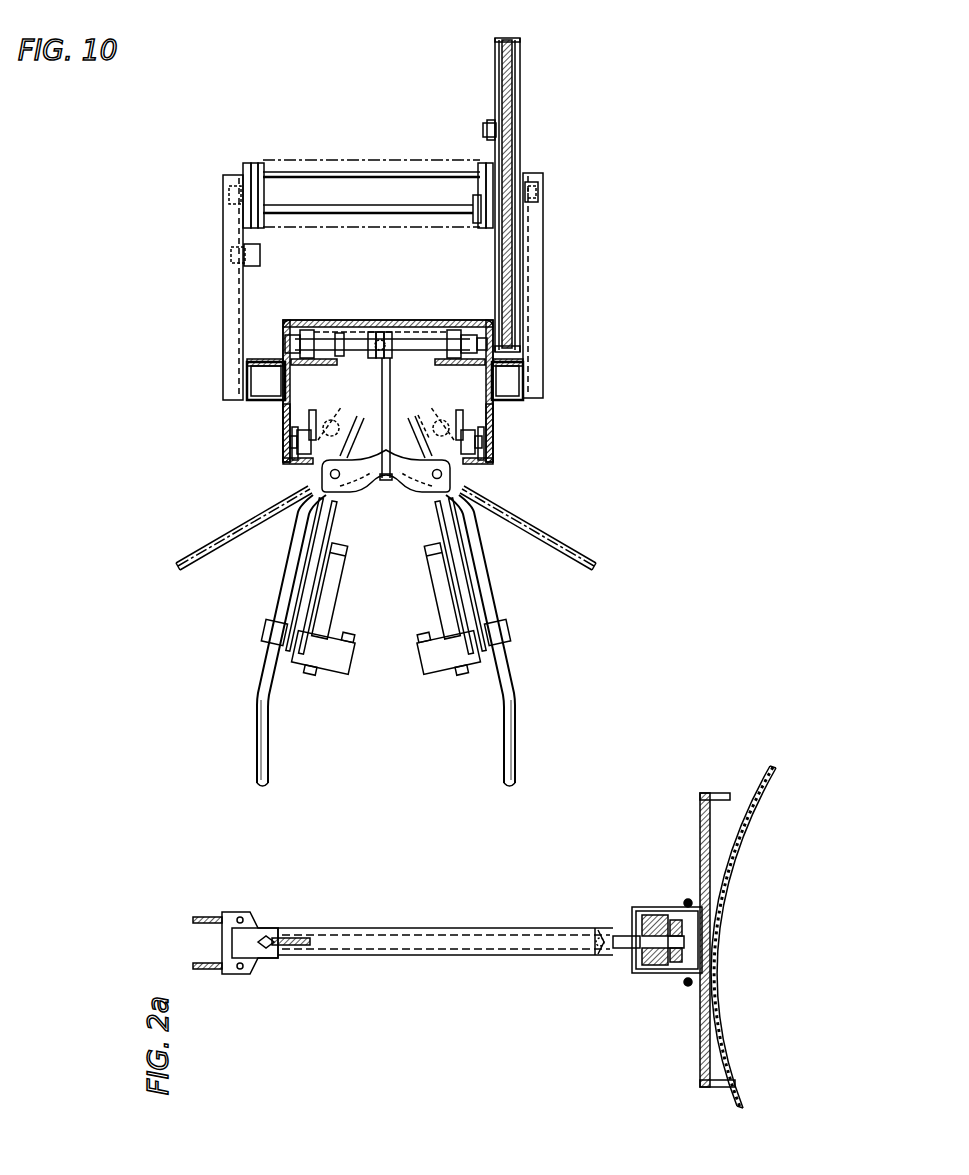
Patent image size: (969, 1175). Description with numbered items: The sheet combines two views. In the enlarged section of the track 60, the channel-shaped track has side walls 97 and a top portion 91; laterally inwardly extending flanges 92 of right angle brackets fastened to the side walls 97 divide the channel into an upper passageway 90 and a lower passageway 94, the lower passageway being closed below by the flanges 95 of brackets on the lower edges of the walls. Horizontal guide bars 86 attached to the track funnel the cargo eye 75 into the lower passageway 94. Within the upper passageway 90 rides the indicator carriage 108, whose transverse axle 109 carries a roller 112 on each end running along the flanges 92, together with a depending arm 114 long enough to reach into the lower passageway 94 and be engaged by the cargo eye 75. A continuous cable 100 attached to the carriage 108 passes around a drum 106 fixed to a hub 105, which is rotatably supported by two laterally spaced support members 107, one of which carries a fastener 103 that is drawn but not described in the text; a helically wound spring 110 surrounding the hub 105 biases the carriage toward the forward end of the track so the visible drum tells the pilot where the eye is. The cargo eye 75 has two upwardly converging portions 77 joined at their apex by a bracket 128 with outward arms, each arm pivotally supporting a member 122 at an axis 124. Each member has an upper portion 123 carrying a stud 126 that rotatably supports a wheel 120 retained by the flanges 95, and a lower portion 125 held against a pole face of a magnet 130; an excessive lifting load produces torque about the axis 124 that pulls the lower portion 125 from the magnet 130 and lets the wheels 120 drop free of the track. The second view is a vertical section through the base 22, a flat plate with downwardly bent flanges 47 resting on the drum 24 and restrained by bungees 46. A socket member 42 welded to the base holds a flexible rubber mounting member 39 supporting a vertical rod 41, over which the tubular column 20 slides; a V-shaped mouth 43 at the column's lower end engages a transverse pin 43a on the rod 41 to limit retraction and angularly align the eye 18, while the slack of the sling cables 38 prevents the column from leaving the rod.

In FIG. 10, the cable 100 is at (507, 36).
In FIG. 10, the drum 106 is at (494, 62).
In FIG. 10, the spring 110 is at (262, 160).
In FIG. 10, the hub 105 is at (333, 172).
In FIG. 10, the mounting nut 103 is at (260, 256).
In FIG. 10, the support member 107 is at (223, 290).
In FIG. 10, the track 60 is at (348, 298).
In FIG. 10, the top portion 91 is at (362, 320).
In FIG. 10, the upper passageway 90 is at (415, 332).
In FIG. 10, the roller 112 is at (307, 330).
In FIG. 10, the axle 109 is at (285, 345).
In FIG. 10, the guide bar 86 is at (385, 381).
In FIG. 10, the flange 92 is at (324, 366).
In FIG. 10, the indicator carriage 108 is at (362, 362).
In FIG. 10, the depending arm 114 is at (400, 395).
In FIG. 10, the lower passageway 94 is at (448, 416).
In FIG. 10, the wheel 120 is at (328, 414).
In FIG. 10, the upper portion 123 is at (352, 414).
In FIG. 10, the side wall 97 is at (283, 410).
In FIG. 10, the stud 126 is at (292, 430).
In FIG. 10, the flange 95 is at (283, 461).
In FIG. 10, the bracket 128 is at (345, 448).
In FIG. 10, the pivot axis 124 is at (330, 478).
In FIG. 10, the member 122 is at (240, 522).
In FIG. 10, the lower portion 125 is at (498, 596).
In FIG. 10, the upwardly converging portion 77 is at (260, 684).
In FIG. 10, the magnet 130 is at (420, 662).
In FIG. 10, the cargo eye 75 is at (475, 742).
In FIG. 2a, the eye 18 is at (216, 918).
In FIG. 2a, the cable 38 is at (292, 936).
In FIG. 2a, the column 20 is at (385, 928).
In FIG. 2a, the transverse pin 43a is at (598, 936).
In FIG. 2a, the rod 41 is at (616, 936).
In FIG. 2a, the V-shaped mouth 43 is at (632, 970).
In FIG. 2a, the socket member 42 is at (652, 912).
In FIG. 2a, the rubber mounting member 39 is at (670, 914).
In FIG. 2a, the bungee 46 is at (688, 900).
In FIG. 2a, the base 22 is at (700, 800).
In FIG. 2a, the flange 47 is at (706, 768).
In FIG. 2a, the drum 24 is at (758, 800).